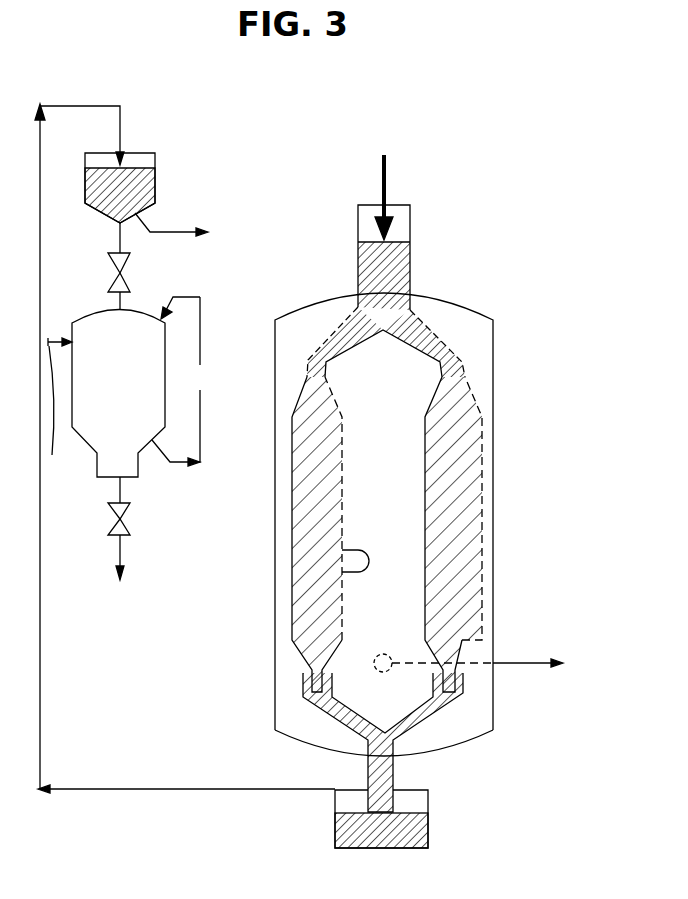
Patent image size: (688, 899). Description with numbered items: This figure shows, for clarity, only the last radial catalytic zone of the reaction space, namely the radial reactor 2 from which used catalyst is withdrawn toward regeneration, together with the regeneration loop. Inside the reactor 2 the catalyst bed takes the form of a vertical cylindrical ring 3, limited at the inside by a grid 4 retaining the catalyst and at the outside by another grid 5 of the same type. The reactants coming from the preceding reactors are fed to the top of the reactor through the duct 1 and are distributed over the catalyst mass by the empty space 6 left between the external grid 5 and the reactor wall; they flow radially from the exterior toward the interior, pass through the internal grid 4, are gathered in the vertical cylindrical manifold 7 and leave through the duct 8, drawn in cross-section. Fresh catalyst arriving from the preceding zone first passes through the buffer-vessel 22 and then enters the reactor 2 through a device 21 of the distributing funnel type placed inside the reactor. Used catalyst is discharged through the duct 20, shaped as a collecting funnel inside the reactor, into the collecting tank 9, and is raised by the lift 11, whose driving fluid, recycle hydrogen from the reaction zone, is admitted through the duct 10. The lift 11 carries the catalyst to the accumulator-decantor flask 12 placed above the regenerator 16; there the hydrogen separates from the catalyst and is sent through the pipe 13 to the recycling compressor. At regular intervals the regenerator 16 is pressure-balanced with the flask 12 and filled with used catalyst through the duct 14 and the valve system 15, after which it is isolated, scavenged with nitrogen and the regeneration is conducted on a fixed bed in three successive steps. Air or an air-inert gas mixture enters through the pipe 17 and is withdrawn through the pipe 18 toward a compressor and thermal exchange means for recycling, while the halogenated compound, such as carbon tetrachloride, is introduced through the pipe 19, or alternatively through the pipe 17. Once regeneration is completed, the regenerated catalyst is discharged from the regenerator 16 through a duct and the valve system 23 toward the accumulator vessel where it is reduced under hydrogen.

The duct 1 is at (549, 302).
The radial reactor 2 is at (476, 309).
The vertical cylindrical ring 3 is at (322, 425).
The grid 4 is at (342, 570).
The grid 5 is at (292, 594).
The empty space 6 is at (288, 622).
The vertical cylindrical manifold 7 is at (383, 639).
The duct 8 is at (372, 668).
The collecting tank 9 is at (430, 836).
The duct 10 is at (432, 803).
The lift 11 is at (122, 122).
The accumulator-decantor flask 12 is at (158, 160).
The pipe 13 is at (193, 232).
The duct 14 is at (117, 308).
The valve system 15 is at (108, 271).
The regenerator 16 is at (164, 306).
The pipe 17 is at (200, 335).
The pipe 18 is at (200, 418).
The pipe 19 is at (60, 410).
The duct 20 is at (395, 775).
The device of the distributing funnel type 21 is at (420, 332).
The vessel 22 is at (412, 223).
The valve system 23 is at (108, 519).